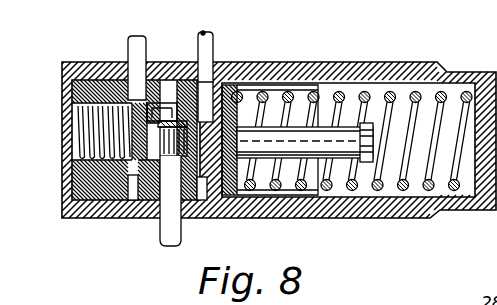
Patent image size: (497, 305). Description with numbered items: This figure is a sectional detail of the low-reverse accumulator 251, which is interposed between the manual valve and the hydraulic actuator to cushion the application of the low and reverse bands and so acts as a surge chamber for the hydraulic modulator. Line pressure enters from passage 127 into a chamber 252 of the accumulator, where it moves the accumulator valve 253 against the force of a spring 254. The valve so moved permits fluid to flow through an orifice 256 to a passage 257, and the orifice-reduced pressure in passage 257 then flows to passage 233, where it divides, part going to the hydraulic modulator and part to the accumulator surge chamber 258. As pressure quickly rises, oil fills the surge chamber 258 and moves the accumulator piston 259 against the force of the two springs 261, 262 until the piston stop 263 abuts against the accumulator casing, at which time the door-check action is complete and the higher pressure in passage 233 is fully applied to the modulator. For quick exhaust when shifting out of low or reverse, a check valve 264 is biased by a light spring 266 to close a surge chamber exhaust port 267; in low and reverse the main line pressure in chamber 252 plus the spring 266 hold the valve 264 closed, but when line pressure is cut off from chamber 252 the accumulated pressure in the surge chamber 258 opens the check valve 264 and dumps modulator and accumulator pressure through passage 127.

The accumulator 251 is at (478, 219).
The chamber 252 is at (168, 193).
The accumulator valve 253 is at (138, 203).
The spring 254 is at (73, 142).
The orifice 256 is at (132, 100).
The passage 257 is at (133, 53).
The accumulator surge chamber 258 is at (217, 80).
The accumulator piston 259 is at (252, 83).
The spring 261 is at (419, 95).
The spring 262 is at (395, 172).
The piston stop 263 is at (354, 130).
The check valve 264 is at (198, 46).
The light spring 266 is at (168, 118).
The surge chamber exhaust port 267 is at (208, 195).
The passage 233 is at (203, 32).
The passage 127 is at (165, 240).